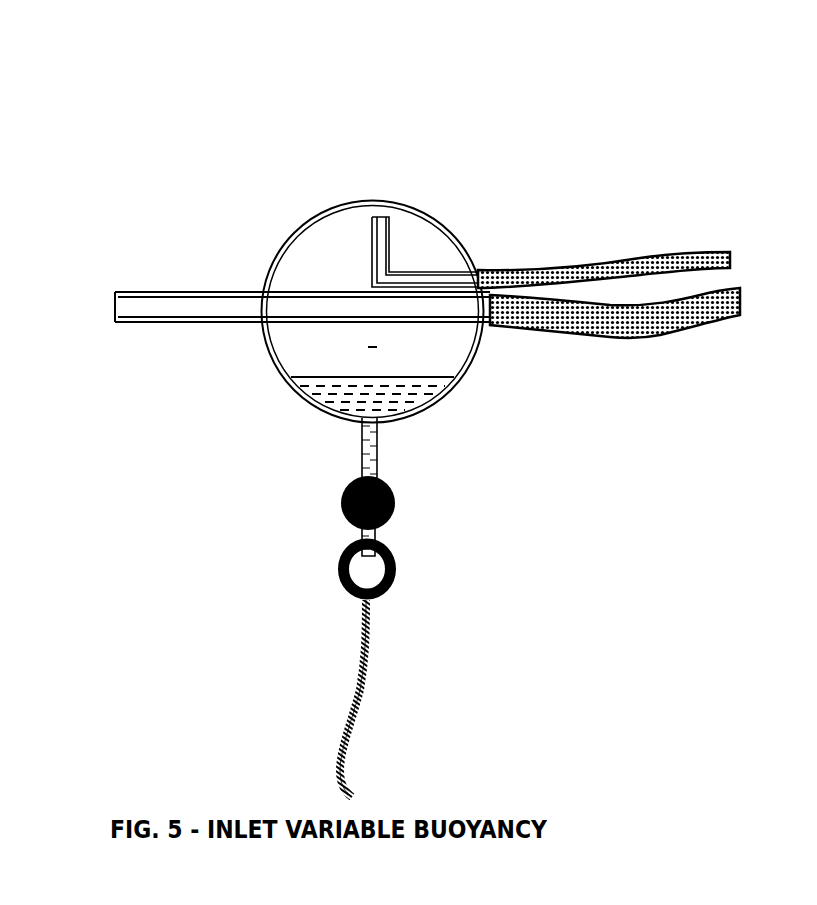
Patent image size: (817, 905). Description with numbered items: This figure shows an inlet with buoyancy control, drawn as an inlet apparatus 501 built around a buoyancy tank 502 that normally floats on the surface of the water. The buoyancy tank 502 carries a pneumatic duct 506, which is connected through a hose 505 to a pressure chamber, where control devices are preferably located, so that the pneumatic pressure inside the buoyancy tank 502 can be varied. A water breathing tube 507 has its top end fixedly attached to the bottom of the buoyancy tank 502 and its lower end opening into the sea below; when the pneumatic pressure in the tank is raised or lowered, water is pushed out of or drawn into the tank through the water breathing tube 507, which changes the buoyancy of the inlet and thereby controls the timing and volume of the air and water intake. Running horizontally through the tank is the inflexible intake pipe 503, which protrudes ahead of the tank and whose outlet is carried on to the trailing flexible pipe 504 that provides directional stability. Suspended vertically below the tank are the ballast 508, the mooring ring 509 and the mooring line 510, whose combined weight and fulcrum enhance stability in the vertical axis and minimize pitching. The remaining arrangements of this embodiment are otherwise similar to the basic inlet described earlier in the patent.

The inlet apparatus 501 is at (427, 403).
The buoyancy tank 502 is at (351, 173).
The inlet pipe 503 is at (235, 285).
The lower flexible hose 504 is at (599, 347).
The hose 505 is at (584, 203).
The pneumatic duct 506 is at (410, 252).
The water breathing tube 507 is at (348, 447).
The weight ball 508 is at (318, 498).
The ring 509 is at (408, 565).
The tether rope 510 is at (347, 630).